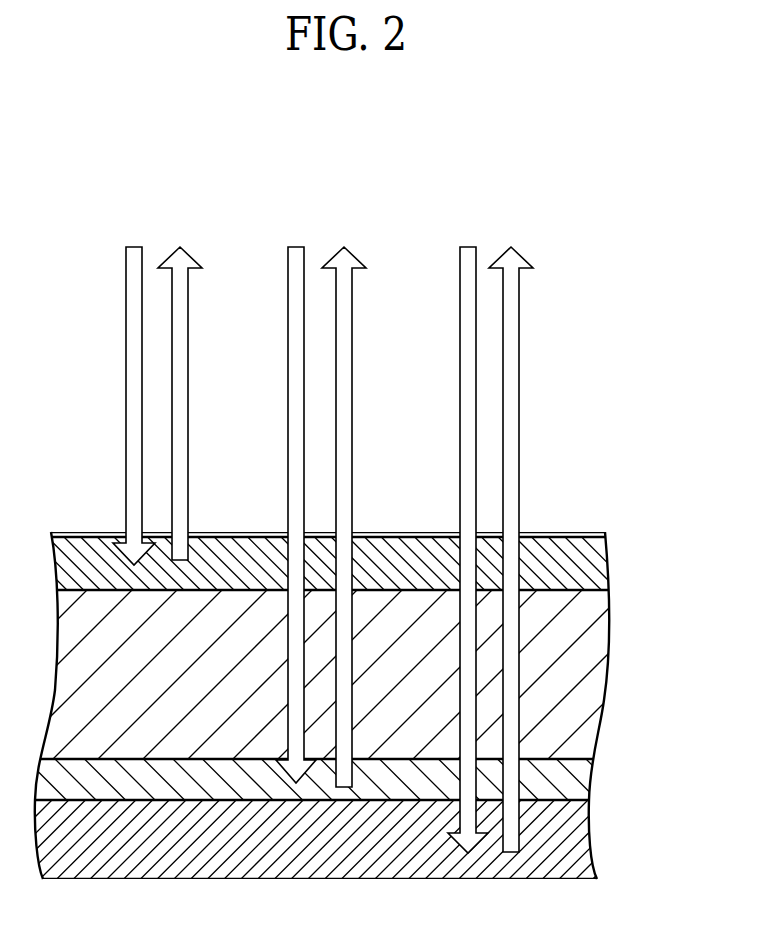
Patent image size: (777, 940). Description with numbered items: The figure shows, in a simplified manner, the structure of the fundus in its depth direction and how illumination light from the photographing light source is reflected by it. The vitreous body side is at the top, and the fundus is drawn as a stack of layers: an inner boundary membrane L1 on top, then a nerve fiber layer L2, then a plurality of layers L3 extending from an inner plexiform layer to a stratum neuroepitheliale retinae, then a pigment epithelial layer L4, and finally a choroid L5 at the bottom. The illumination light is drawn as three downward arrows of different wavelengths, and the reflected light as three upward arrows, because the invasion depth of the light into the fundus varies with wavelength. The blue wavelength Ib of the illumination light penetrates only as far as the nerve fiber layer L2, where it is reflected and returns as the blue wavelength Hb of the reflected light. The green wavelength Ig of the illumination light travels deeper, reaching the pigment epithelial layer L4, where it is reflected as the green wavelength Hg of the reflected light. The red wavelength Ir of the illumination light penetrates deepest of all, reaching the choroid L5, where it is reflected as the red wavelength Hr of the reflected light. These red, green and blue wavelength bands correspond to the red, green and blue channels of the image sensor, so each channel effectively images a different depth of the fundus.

The inner boundary membrane L1 is at (606, 533).
The nerve fiber layer L2 is at (596, 567).
The plurality of layers from an inner plexiform layer to a stratum neuroepitheliale L3 is at (592, 682).
The pigment epithelial layer L4 is at (582, 777).
The choroid L5 is at (585, 837).
The blue wavelength of the illumination light Ib is at (131, 245).
The blue wavelength of the reflected light Hb is at (189, 246).
The green wavelength of the illumination light Ig is at (294, 245).
The green wavelength of the reflected light Hg is at (350, 246).
The red wavelength of the illumination light Ir is at (467, 245).
The red wavelength of the reflected light Hr is at (518, 246).